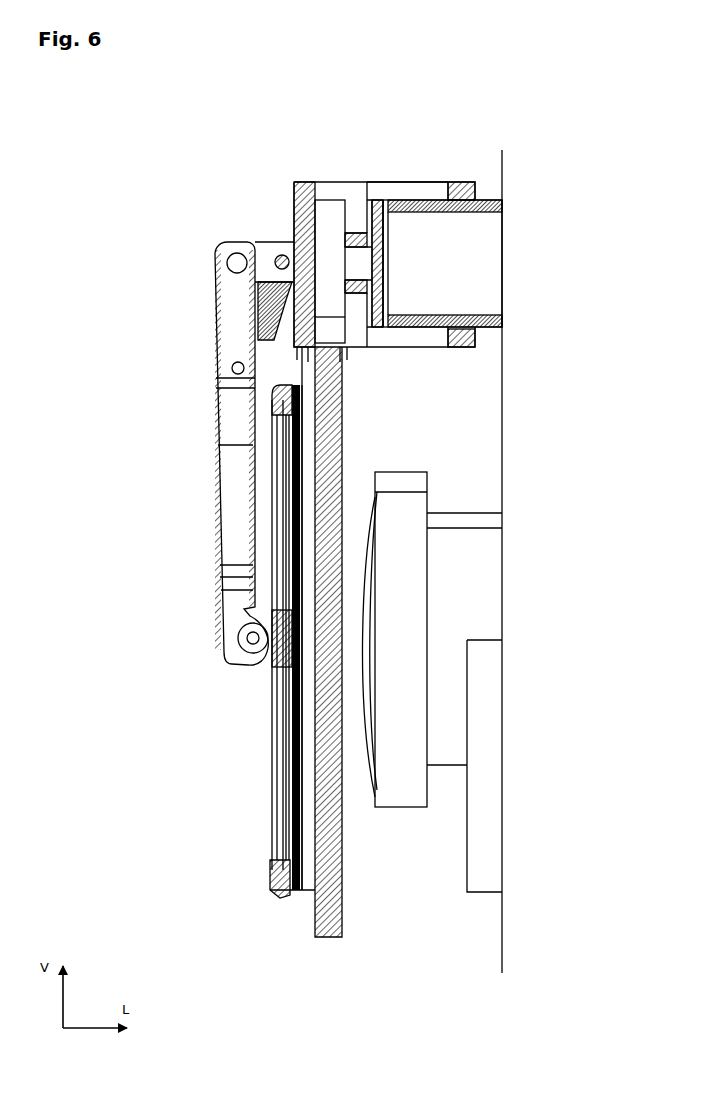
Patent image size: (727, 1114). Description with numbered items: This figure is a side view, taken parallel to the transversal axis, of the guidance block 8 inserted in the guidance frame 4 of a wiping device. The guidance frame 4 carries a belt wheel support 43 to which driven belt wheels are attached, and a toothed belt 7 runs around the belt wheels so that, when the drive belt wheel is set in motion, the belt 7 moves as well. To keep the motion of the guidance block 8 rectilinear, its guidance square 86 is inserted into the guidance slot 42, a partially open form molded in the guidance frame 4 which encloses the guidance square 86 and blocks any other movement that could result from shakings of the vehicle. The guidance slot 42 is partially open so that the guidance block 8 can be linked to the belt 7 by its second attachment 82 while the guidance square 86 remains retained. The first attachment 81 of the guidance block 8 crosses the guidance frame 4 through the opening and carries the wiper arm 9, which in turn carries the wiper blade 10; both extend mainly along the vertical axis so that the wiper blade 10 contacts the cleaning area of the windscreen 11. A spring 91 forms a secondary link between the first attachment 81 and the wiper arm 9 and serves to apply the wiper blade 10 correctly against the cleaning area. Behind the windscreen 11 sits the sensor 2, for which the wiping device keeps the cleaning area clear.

The sensor 2 is at (400, 612).
The guidance frame 4 is at (330, 337).
The belt 7 is at (465, 255).
The guidance block 8 is at (333, 192).
The wiper arm 9 is at (235, 302).
The wiper blade 10 is at (282, 770).
The windscreen 11 is at (330, 925).
The guidance slot 42 is at (343, 318).
The belt wheel support 43 is at (408, 192).
The first attachment 81 is at (281, 250).
The second attachment 82 is at (377, 240).
The guidance square 86 is at (333, 255).
The spring 91 is at (252, 318).